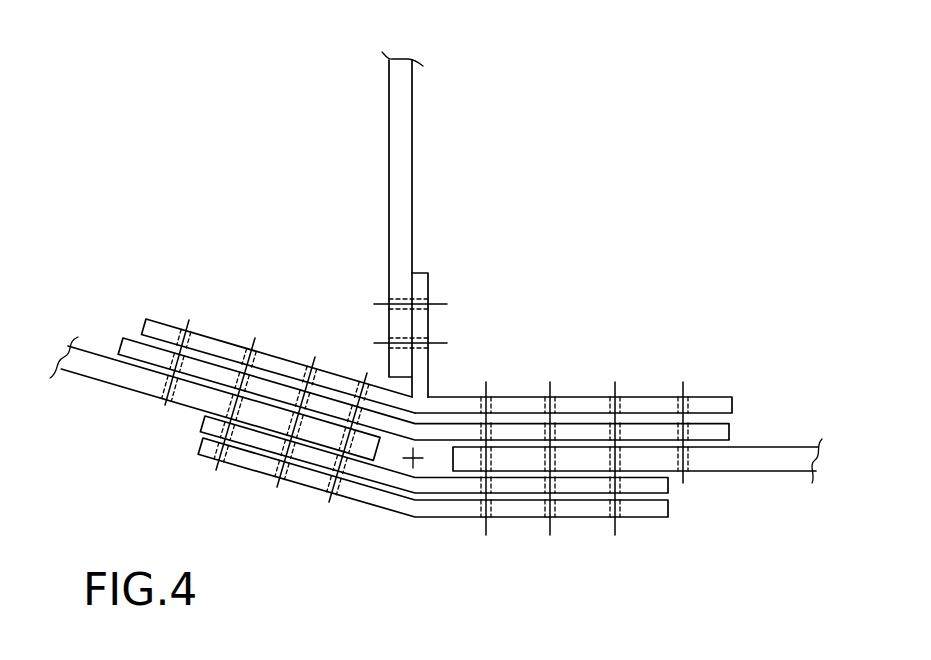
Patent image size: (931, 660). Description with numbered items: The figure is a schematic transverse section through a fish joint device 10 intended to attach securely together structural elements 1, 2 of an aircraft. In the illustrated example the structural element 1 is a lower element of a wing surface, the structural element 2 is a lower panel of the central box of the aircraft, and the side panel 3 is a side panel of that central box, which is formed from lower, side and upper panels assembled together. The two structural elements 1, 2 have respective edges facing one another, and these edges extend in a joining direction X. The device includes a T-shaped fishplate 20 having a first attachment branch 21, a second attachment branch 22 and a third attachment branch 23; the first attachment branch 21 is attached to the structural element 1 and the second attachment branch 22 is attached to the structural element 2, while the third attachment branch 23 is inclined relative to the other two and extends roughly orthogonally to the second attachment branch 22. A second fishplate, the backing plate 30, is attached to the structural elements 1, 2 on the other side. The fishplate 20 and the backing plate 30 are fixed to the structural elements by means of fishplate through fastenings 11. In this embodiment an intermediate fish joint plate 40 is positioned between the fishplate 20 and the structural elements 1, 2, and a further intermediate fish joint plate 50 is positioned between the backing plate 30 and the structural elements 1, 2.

The structural element 1 is at (80, 362).
The structural element 2 is at (792, 458).
The side panel 3 is at (400, 117).
The fish joint device 10 is at (712, 212).
The fishplate through fastenings 11 is at (218, 465).
The T-shaped fishplate 20 is at (727, 388).
The first attachment branch 21 is at (163, 329).
The second attachment branch 22 is at (583, 397).
The third attachment branch 23 is at (420, 287).
The backing plate 30 is at (390, 517).
The intermediate fish joint plate 40 is at (717, 433).
The intermediate fish joint plate 50 is at (658, 487).
The joining direction X is at (413, 458).